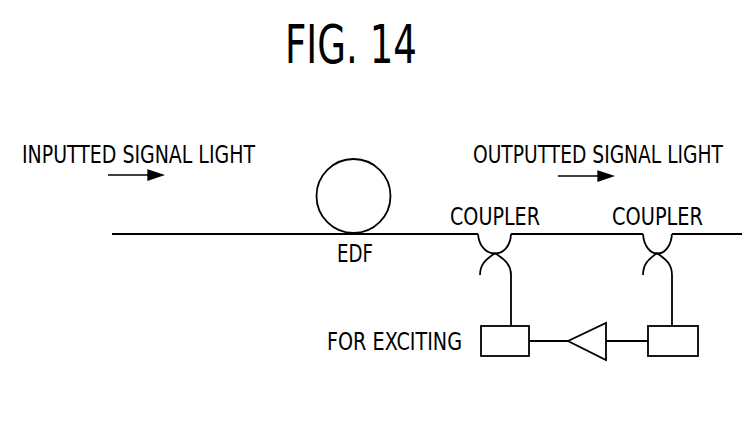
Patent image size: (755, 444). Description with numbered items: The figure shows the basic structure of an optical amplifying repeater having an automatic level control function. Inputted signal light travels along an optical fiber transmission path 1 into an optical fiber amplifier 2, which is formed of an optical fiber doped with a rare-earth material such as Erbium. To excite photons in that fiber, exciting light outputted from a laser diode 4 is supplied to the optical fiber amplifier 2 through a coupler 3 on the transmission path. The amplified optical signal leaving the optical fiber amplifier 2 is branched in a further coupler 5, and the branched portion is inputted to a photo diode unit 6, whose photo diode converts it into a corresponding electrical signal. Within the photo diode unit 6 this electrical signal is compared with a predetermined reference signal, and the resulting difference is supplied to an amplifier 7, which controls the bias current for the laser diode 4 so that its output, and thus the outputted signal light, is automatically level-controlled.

The optical fiber transmission path 1 is at (227, 235).
The optical fiber amplifier 2 is at (390, 188).
The coupler 3 is at (496, 256).
The laser diode 4 is at (510, 357).
The coupler 5 is at (674, 236).
The photo diode unit 6 is at (672, 357).
The amplifier 7 is at (594, 361).